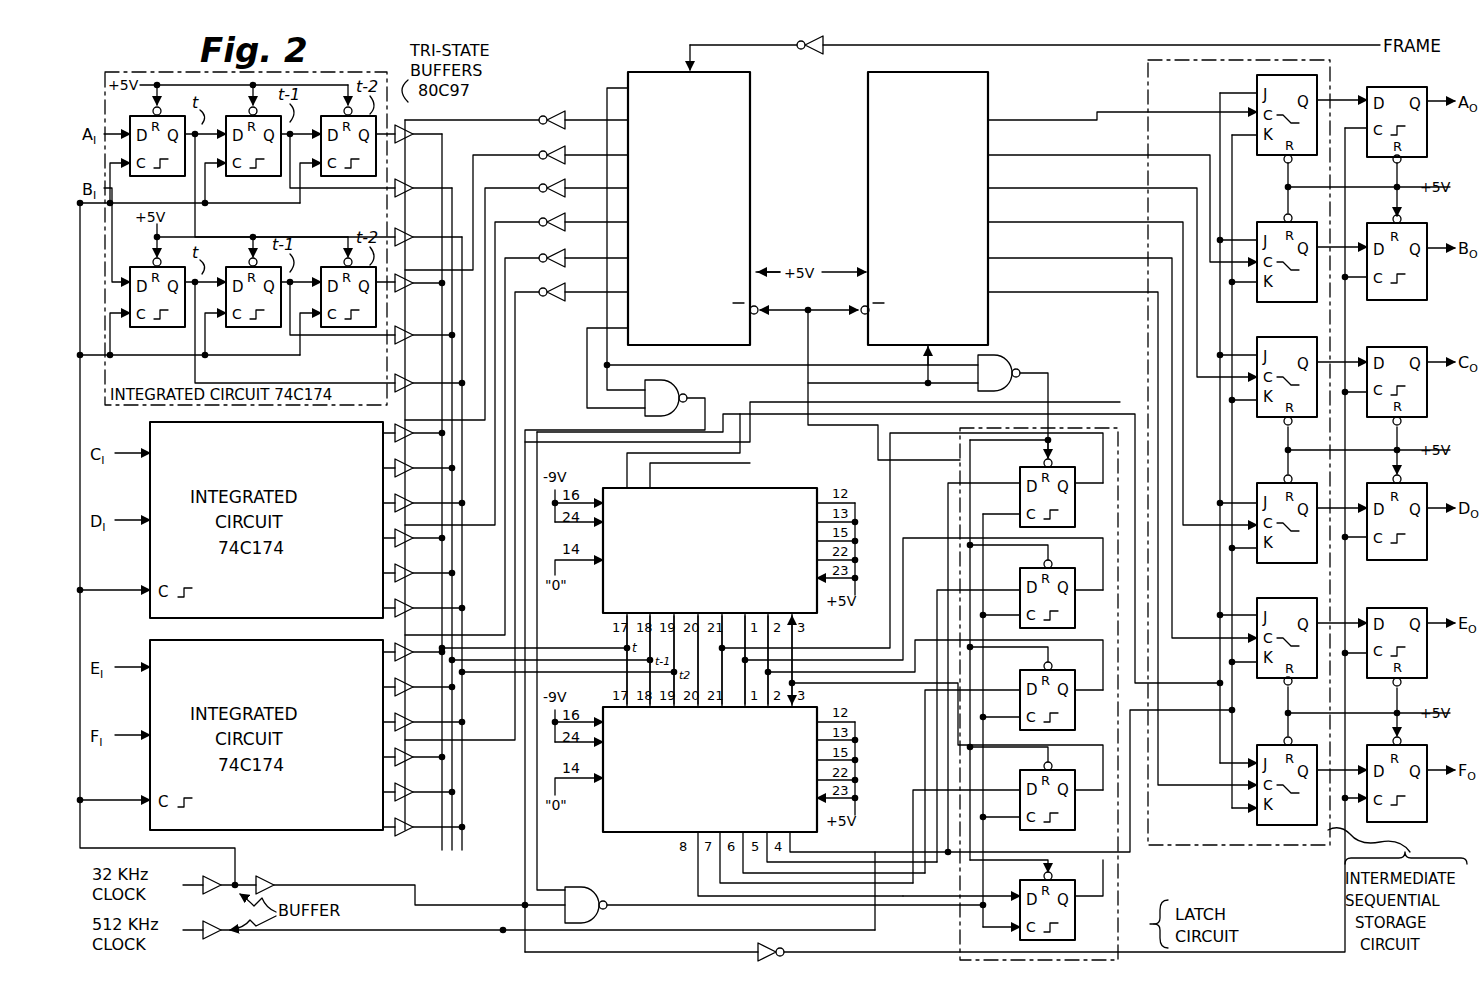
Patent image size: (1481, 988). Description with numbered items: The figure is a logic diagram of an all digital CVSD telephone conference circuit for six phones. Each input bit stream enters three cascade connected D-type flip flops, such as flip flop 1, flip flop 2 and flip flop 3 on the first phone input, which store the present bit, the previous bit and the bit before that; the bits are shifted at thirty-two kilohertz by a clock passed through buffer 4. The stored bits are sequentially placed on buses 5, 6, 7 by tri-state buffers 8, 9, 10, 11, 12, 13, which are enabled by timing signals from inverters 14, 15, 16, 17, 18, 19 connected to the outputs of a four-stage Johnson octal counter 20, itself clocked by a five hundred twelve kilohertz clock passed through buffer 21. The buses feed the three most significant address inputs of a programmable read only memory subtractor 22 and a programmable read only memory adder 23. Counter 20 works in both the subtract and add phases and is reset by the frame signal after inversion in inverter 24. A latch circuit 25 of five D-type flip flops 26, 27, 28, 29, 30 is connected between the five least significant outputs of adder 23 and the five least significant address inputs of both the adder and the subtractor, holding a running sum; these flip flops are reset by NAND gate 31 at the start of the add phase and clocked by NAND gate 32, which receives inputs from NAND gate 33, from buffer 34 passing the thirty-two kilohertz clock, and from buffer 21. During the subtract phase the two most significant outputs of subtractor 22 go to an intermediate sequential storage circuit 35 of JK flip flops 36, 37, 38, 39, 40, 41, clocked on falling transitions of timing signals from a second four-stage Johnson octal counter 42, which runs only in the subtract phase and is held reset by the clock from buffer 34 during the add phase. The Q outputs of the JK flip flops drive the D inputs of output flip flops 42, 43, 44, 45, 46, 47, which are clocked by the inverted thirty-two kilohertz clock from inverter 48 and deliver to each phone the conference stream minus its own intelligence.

The flip flop 1 is at (157, 180).
The flip flop 2 is at (246, 180).
The flip flop 3 is at (346, 180).
The buffer 4 is at (214, 880).
The bus 5 is at (448, 248).
The bus 6 is at (445, 186).
The bus 7 is at (440, 146).
The tri-state buffer 8 is at (426, 126).
The tri-state buffer 9 is at (424, 246).
The tri-state buffer 10 is at (412, 398).
The tri-state buffer 11 is at (417, 518).
The tri-state buffer 12 is at (415, 624).
The tri-state buffer 13 is at (415, 732).
The inverter 14 is at (550, 108).
The inverter 15 is at (546, 138).
The inverter 16 is at (546, 174).
The inverter 17 is at (550, 208).
The inverter 18 is at (550, 244).
The inverter 19 is at (548, 280).
The four-stage Johnson octal counter 20 is at (752, 98).
The buffer 21 is at (227, 935).
The programmable read only memory subtractor 22 is at (600, 614).
The programmable read only memory adder 23 is at (640, 836).
The inverter 24 is at (818, 58).
The latch circuit 25 is at (1120, 860).
The flip flop 26 is at (1076, 508).
The flip flop 27 is at (1076, 610).
The flip flop 28 is at (1076, 712).
The flip flop 29 is at (1076, 812).
The flip flop 30 is at (1076, 920).
The NAND gate 31 is at (1000, 365).
The NAND gate 32 is at (564, 886).
The NAND gate 33 is at (680, 392).
The buffer 34 is at (270, 880).
The intermediate sequential storage circuit 35 is at (1208, 838).
The JK flip flop 36 is at (1256, 80).
The JK flip flop 37 is at (1262, 220).
The JK flip flop 38 is at (1268, 334).
The JK flip flop 39 is at (1264, 482).
The JK flip flop 40 is at (1264, 594).
The JK flip flop 41 is at (1264, 744).
The four-stage Johnson octal counter 42 is at (996, 102).
The flip flop 43 is at (1425, 276).
The flip flop 44 is at (1425, 396).
The flip flop 45 is at (1425, 536).
The flip flop 46 is at (1425, 654).
The flip flop 47 is at (1425, 796).
The inverter 48 is at (788, 948).